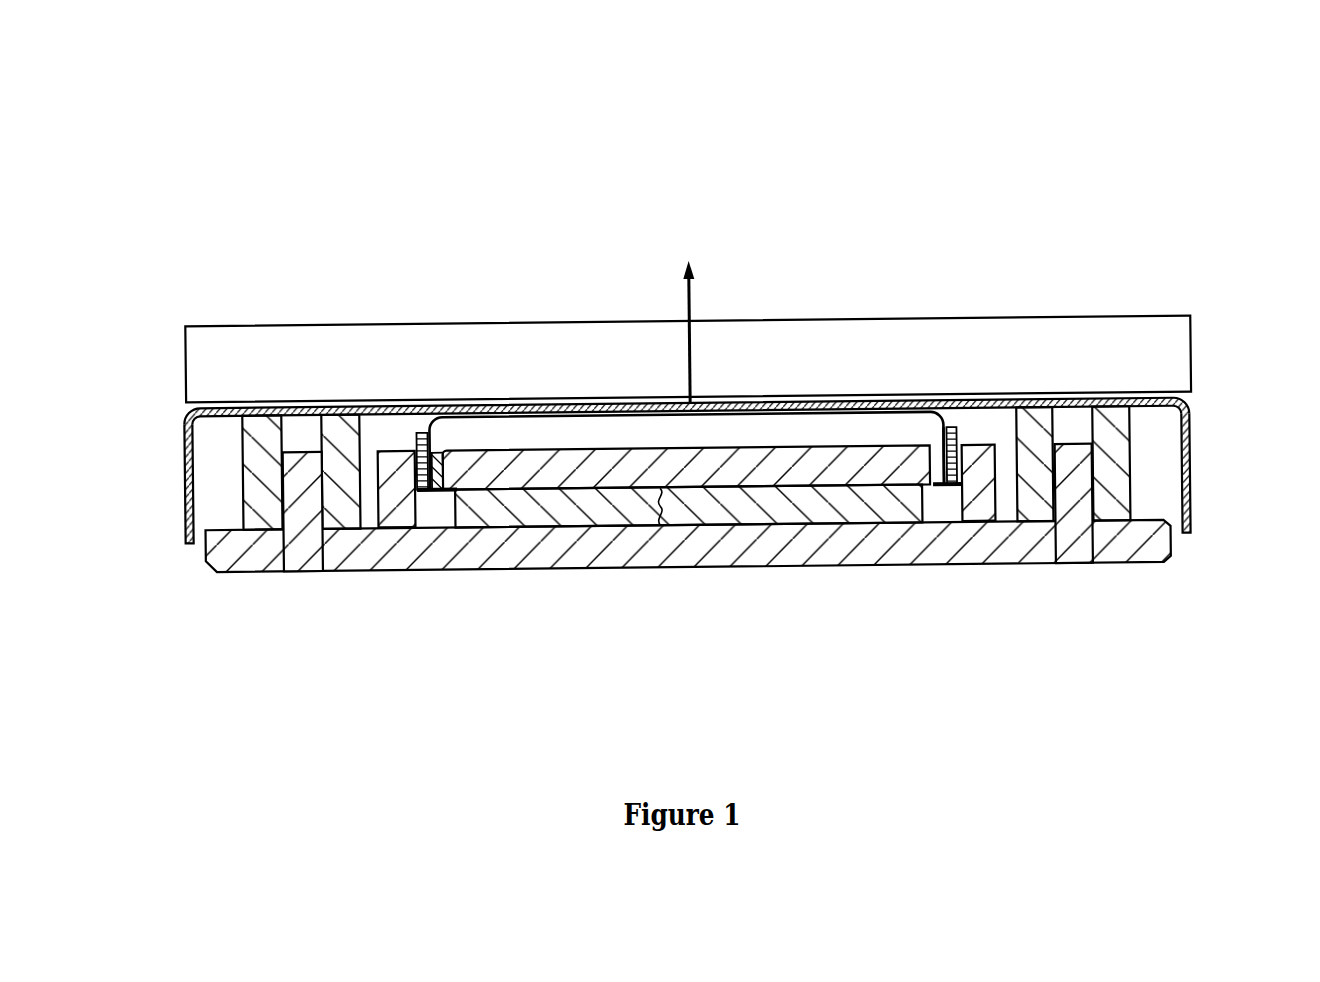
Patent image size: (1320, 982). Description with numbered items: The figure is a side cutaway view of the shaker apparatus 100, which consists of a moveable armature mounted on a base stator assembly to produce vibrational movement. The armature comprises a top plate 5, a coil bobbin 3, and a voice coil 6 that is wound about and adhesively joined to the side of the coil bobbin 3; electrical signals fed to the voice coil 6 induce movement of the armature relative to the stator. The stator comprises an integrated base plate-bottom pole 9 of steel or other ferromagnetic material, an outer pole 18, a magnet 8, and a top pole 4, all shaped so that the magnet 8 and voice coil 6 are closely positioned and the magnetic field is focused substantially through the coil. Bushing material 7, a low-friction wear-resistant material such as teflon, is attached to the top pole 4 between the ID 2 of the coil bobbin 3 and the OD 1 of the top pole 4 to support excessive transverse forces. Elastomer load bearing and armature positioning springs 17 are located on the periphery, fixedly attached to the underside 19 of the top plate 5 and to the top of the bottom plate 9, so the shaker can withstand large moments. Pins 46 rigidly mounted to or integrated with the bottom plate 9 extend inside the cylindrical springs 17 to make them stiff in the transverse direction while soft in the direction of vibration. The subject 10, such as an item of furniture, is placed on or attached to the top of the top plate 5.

The shaker apparatus 100 is at (891, 70).
The OD of the top pole 1 is at (417, 466).
The ID of coil bobbin 2 is at (436, 444).
The coil bobbin 3 is at (960, 405).
The top pole 4 is at (592, 463).
The top plate 5 is at (650, 410).
The voice coil 6 is at (958, 447).
The bushing material 7 is at (938, 490).
The magnet 8 is at (732, 503).
The integrated base plate-bottom pole 9 is at (1030, 540).
The subject 10 is at (785, 358).
The springs 17 is at (255, 462).
The outer pole 18 is at (404, 497).
The underside of the top plate 19 is at (1190, 412).
The pins 46 is at (308, 540).